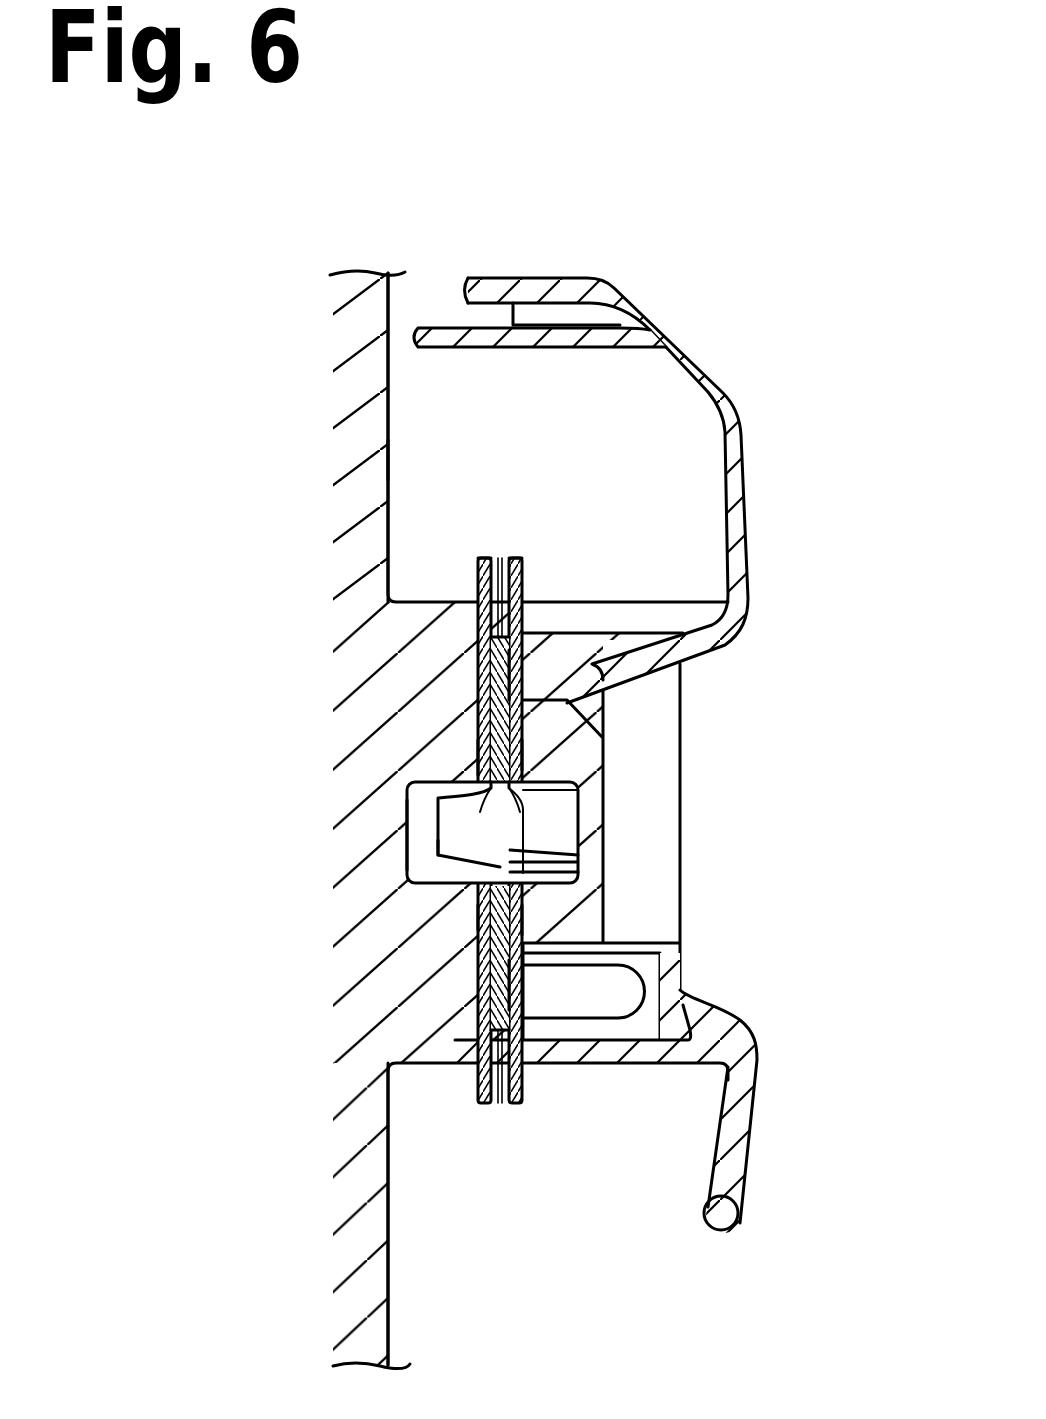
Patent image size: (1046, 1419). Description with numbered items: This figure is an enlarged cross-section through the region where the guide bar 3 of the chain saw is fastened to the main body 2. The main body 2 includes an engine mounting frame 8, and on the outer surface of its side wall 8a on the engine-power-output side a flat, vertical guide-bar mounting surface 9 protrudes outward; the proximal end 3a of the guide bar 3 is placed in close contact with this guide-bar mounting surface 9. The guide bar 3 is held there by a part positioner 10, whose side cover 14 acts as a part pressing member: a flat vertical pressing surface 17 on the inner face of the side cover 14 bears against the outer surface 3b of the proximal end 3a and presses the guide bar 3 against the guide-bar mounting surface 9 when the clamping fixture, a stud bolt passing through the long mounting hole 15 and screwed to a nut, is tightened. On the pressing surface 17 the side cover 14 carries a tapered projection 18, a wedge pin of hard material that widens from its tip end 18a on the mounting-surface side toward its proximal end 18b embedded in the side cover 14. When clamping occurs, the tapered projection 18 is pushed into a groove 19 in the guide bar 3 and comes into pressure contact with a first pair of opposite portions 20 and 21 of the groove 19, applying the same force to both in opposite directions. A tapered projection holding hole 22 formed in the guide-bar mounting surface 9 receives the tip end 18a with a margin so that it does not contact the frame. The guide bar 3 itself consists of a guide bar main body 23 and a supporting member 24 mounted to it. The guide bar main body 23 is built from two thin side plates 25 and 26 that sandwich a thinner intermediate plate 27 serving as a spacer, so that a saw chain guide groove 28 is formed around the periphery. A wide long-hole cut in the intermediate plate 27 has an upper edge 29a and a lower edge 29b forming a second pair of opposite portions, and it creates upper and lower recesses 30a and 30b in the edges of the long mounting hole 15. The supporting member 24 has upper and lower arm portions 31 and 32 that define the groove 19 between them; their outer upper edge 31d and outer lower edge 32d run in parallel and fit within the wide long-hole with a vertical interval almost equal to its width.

The main body 2 is at (402, 301).
The guide bar 3 is at (420, 1192).
The proximal end 3a is at (477, 717).
The outer surface 3b is at (522, 732).
The engine mounting frame 8 is at (400, 411).
The side wall 8a is at (390, 462).
The guide-bar mounting surface 9 is at (523, 633).
The part positioner 10 is at (642, 784).
The side cover 14 is at (754, 620).
The long mounting hole 15 is at (578, 813).
The pressing surface 17 is at (475, 768).
The tapered projection 18 is at (407, 863).
The tip end 18a is at (407, 875).
The proximal end 18b is at (560, 807).
The groove 19 is at (432, 843).
The opposite portion 20 is at (578, 837).
The opposite portion 21 is at (578, 853).
The tapered projection holding hole 22 is at (489, 803).
The guide bar main body 23 is at (520, 545).
The supporting member 24 is at (522, 953).
The side plate 25 is at (483, 1106).
The side plate 26 is at (512, 1106).
The intermediate plate 27 is at (500, 1106).
The saw chain guide groove 28 is at (500, 577).
The upper edge 29a is at (477, 748).
The lower edge 29b is at (477, 920).
The upper recess 30a is at (522, 767).
The lower recess 30b is at (530, 923).
The upper arm portion 31 is at (480, 780).
The outer upper edge 31d is at (523, 675).
The lower arm portion 32 is at (474, 901).
The outer lower edge 32d is at (522, 960).